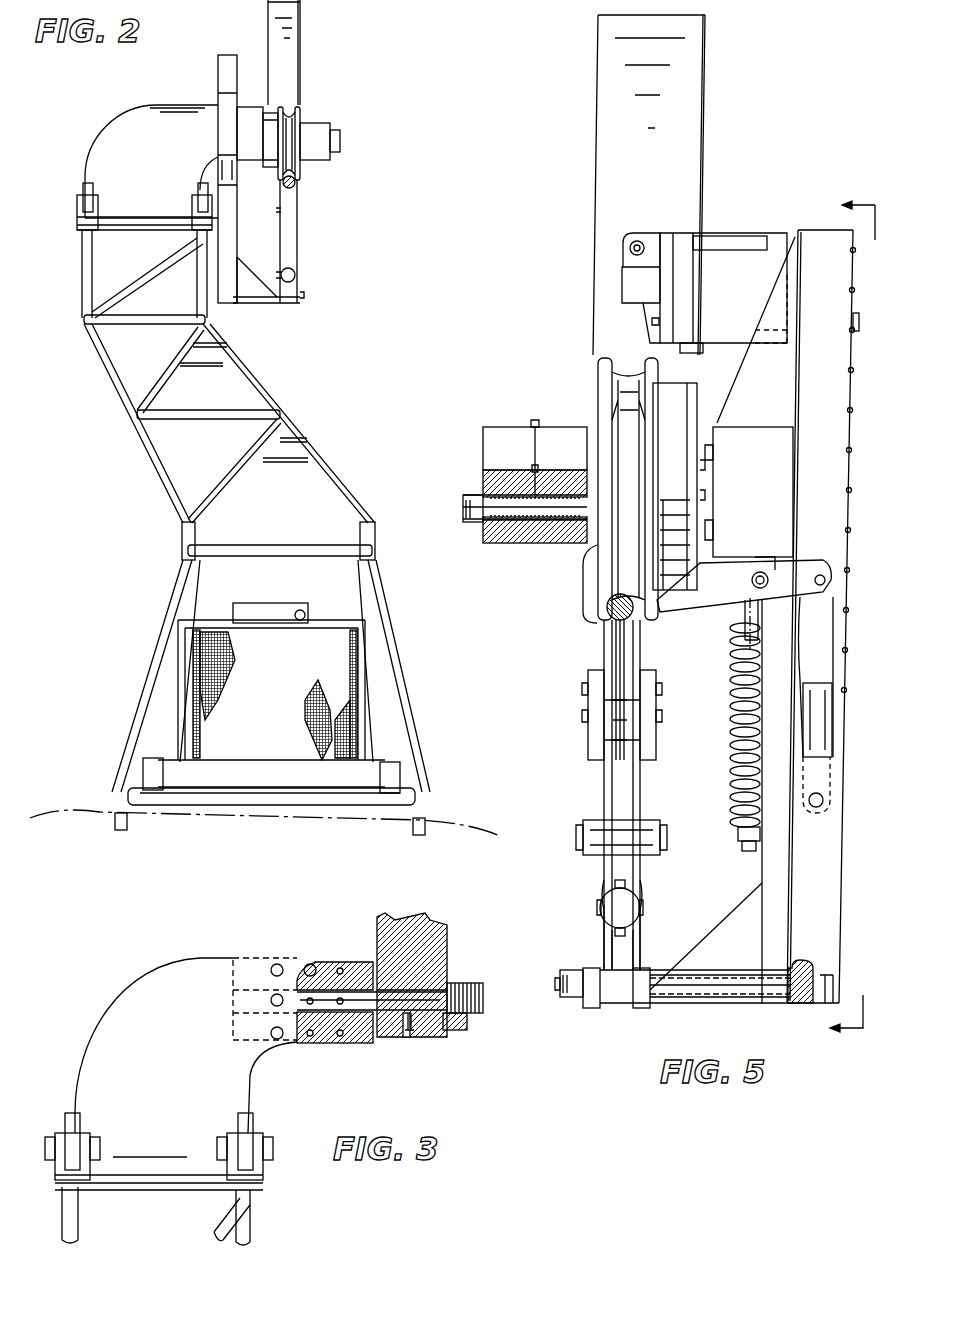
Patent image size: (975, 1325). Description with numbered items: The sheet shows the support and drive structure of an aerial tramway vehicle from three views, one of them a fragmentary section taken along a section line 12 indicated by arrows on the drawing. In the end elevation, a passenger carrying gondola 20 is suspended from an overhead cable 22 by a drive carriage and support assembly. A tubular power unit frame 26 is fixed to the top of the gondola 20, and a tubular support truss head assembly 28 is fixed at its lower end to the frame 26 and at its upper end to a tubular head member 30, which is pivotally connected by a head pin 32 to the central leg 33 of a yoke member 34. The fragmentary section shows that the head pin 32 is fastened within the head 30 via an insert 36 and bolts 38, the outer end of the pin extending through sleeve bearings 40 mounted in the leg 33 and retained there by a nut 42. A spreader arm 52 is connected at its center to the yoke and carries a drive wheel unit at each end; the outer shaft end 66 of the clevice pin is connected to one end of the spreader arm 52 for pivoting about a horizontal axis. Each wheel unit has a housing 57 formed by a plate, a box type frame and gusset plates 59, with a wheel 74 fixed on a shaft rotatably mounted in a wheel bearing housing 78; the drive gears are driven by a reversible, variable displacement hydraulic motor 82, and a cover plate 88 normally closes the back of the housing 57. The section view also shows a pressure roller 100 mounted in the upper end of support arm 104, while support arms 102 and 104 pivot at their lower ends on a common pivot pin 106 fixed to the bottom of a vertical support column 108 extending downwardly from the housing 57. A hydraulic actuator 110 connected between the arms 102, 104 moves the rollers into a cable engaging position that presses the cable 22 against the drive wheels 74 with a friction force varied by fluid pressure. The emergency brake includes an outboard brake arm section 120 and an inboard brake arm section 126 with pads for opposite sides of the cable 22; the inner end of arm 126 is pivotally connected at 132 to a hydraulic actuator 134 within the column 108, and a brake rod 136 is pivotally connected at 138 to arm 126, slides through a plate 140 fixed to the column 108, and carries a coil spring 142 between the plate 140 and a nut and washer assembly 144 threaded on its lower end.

In FIG. 5, the section line 12 is at (855, 617).
In FIG. 2, the passenger carrying gondola 20 is at (440, 824).
In FIG. 2, the cable 22 is at (297, 185).
In FIG. 5, the cable 22 is at (626, 642).
In FIG. 2, the power unit frame 26 is at (410, 712).
In FIG. 2, the support truss head assembly 28 is at (150, 465).
In FIG. 3, the support truss head assembly 28 is at (252, 1222).
In FIG. 2, the head member 30 is at (163, 176).
In FIG. 3, the head member 30 is at (85, 1050).
In FIG. 3, the head pin 32 is at (458, 1030).
In FIG. 3, the central leg 33 is at (440, 956).
In FIG. 2, the yoke member 34 is at (288, 60).
In FIG. 5, the yoke member 34 is at (695, 60).
In FIG. 3, the insert 36 is at (355, 1048).
In FIG. 3, the bolts 38 is at (305, 965).
In FIG. 3, the sleeve bearings 40 is at (418, 1040).
In FIG. 3, the nut 42 is at (465, 983).
In FIG. 2, the spreader arm 52 is at (322, 125).
In FIG. 5, the spreader arm 52 is at (520, 540).
In FIG. 2, the housing 57 is at (222, 100).
In FIG. 5, the housing 57 is at (822, 225).
In FIG. 5, the gusset plates 59 is at (770, 403).
In FIG. 5, the outer shaft end 66 is at (480, 495).
In FIG. 5, the wheel 74 is at (605, 590).
In FIG. 5, the wheel bearing housing 78 is at (762, 483).
In FIG. 5, the hydraulic motor 82 is at (745, 298).
In FIG. 5, the cover plate 88 is at (851, 400).
In FIG. 5, the pressure roller 100 is at (603, 646).
In FIG. 5, the support arm 102 is at (592, 965).
In FIG. 5, the support arm 104 is at (645, 805).
In FIG. 5, the pivot pin 106 is at (612, 1007).
In FIG. 5, the support column 108 is at (825, 900).
In FIG. 5, the hydraulic actuator 110 is at (630, 903).
In FIG. 5, the outboard brake arm section 120 is at (586, 568).
In FIG. 5, the inboard brake arm section 126 is at (690, 602).
In FIG. 5, the pivotal connection 132 is at (822, 575).
In FIG. 5, the hydraulic actuator 134 is at (822, 728).
In FIG. 5, the brake rod 136 is at (752, 610).
In FIG. 5, the pivotal connection 138 is at (760, 572).
In FIG. 5, the plate 140 is at (745, 648).
In FIG. 5, the coil spring 142 is at (730, 748).
In FIG. 5, the nut and washer assembly 144 is at (735, 828).